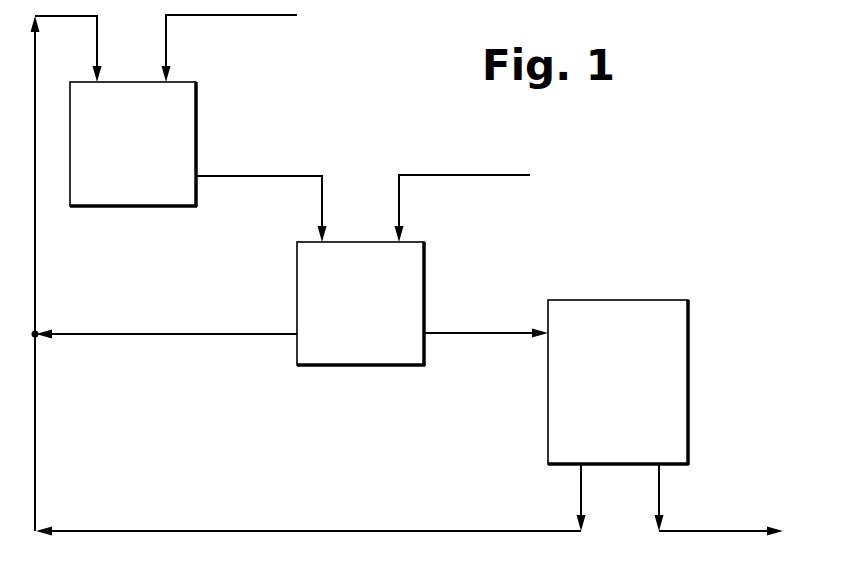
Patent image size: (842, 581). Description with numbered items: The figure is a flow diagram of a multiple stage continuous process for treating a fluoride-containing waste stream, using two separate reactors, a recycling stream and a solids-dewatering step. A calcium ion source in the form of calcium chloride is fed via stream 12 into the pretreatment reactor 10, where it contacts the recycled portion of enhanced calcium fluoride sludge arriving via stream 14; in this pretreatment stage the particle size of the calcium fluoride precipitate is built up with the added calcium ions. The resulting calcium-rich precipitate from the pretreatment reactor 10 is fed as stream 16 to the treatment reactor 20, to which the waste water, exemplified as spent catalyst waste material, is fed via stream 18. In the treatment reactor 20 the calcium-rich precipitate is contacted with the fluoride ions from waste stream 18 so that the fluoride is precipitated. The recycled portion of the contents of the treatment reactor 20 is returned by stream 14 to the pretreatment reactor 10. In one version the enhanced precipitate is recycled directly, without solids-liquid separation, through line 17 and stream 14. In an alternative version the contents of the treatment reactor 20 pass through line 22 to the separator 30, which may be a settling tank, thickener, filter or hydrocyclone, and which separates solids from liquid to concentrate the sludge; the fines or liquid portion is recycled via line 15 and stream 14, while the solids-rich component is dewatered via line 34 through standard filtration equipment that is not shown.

The pretreatment reactor 10 is at (140, 207).
The calcium ion source stream 12 is at (232, 16).
The recycle stream 14 is at (36, 253).
The separator recycle line 15 is at (580, 497).
The calcium-rich precipitate stream 16 is at (258, 176).
The direct recycle line 17 is at (228, 334).
The waste water stream 18 is at (454, 175).
The treatment reactor 20 is at (364, 366).
The reactor 20 outlet line to separator 22 is at (460, 333).
The separator 30 is at (689, 399).
The solids dewatering line 34 is at (707, 531).